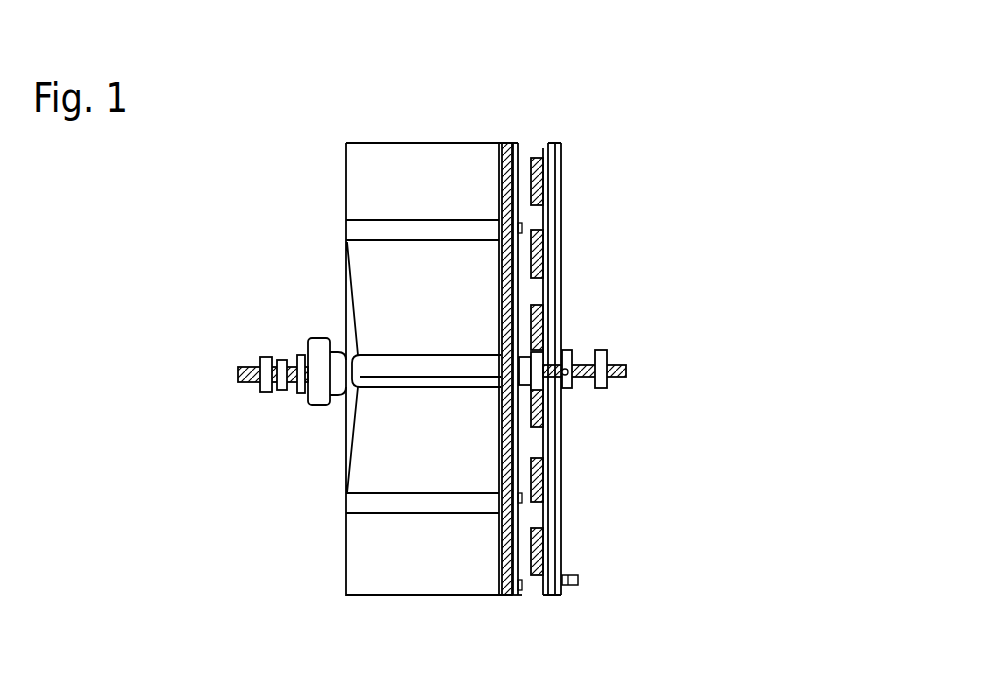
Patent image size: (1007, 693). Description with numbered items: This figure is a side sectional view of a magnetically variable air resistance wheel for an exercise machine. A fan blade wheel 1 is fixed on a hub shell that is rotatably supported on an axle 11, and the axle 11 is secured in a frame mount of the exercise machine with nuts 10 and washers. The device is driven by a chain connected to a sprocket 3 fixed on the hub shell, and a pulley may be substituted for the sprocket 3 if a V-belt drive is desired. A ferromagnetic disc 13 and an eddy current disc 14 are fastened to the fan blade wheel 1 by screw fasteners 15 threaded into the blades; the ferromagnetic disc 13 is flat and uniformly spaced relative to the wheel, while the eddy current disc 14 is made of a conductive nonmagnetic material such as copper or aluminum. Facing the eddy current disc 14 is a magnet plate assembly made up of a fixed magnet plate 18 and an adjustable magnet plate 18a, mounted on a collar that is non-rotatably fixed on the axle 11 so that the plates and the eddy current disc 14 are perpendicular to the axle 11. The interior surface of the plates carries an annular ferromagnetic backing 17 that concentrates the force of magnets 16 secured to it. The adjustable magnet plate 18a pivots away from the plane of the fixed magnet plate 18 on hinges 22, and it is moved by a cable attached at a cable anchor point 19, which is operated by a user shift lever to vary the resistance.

The fan blade wheel 1 is at (360, 542).
The sprocket 3 is at (318, 405).
The nuts 10 is at (602, 350).
The axle 11 is at (252, 365).
The ferromagnetic disc 13 is at (497, 145).
The eddy current disc 14 is at (513, 143).
The screw fasteners 15 is at (525, 597).
The magnets 16 is at (535, 150).
The annular ferromagnetic backing 17 is at (545, 143).
The fixed magnet plate 18 is at (553, 212).
The adjustable magnet plate 18a is at (557, 517).
The cable anchor point 19 is at (578, 585).
The hinges 22 is at (568, 390).